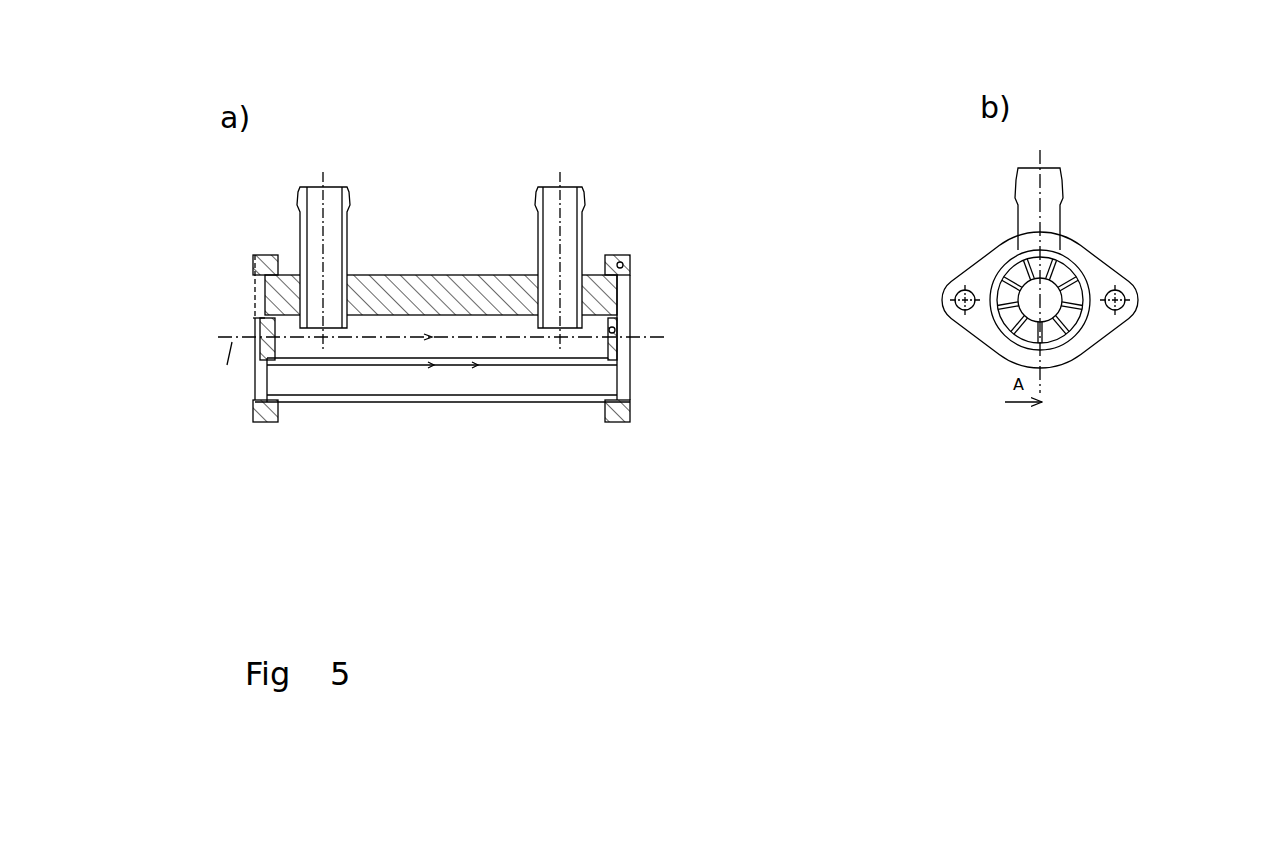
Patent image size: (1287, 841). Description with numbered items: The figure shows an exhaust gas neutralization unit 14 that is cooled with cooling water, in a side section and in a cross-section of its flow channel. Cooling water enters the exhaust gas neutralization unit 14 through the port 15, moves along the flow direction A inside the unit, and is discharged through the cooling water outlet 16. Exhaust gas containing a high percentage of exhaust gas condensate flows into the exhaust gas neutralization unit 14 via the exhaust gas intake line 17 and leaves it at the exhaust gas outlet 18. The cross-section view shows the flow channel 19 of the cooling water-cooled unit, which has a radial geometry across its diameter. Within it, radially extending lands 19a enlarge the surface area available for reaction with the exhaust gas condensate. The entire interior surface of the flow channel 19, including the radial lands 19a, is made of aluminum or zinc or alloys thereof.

The exhaust gas neutralization unit 14 is at (447, 133).
The port 15 is at (328, 208).
The cooling water outlet 16 is at (567, 208).
The exhaust gas intake line 17 is at (253, 321).
The exhaust gas outlet 18 is at (630, 316).
The flow channel 19 is at (1066, 330).
The radially extending lands 19a is at (1073, 318).